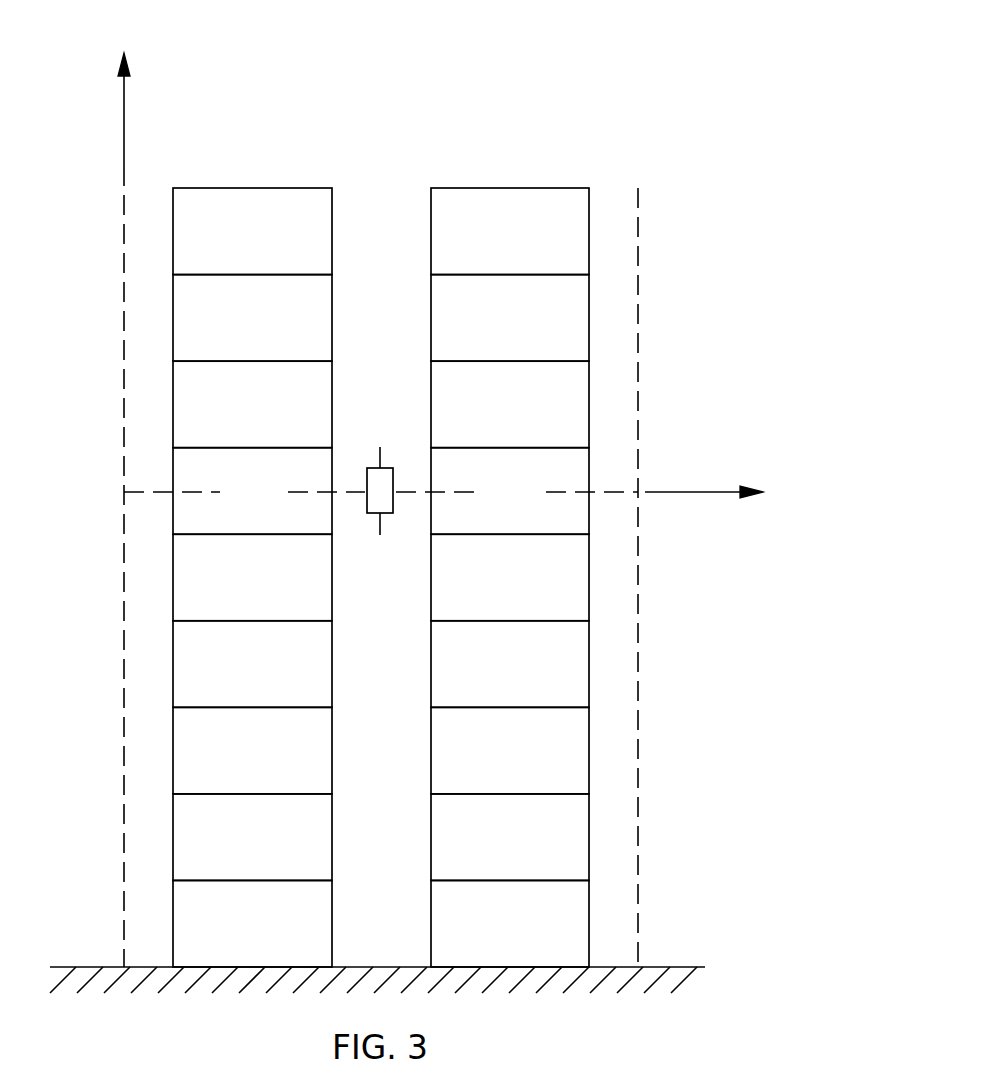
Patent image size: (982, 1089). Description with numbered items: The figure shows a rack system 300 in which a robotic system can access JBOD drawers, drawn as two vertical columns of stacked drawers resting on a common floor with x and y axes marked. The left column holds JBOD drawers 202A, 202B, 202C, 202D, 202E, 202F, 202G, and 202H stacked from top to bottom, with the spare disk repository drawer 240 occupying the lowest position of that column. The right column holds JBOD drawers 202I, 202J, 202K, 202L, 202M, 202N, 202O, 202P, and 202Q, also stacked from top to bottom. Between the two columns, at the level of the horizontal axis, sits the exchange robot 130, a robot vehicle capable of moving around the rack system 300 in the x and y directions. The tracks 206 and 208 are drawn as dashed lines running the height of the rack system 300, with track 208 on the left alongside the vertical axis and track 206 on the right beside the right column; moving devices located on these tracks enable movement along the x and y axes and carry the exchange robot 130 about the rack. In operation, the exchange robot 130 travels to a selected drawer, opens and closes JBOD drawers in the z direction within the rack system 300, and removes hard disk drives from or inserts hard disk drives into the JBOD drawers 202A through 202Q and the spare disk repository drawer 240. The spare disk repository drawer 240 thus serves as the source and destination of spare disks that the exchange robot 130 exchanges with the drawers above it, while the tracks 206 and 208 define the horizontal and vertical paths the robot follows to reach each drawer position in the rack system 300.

The rack system 300 is at (712, 123).
The exchange robot 130 is at (390, 468).
The track 206 is at (620, 492).
The track 208 is at (124, 565).
The spare disk repository drawer 240 is at (173, 925).
The JBOD drawer 202A is at (221, 247).
The JBOD drawer 202B is at (221, 334).
The JBOD drawer 202C is at (221, 420).
The JBOD drawer 202D is at (221, 507).
The JBOD drawer 202E is at (221, 593).
The JBOD drawer 202F is at (221, 680).
The JBOD drawer 202G is at (221, 766).
The JBOD drawer 202H is at (221, 853).
The JBOD drawer 202I is at (541, 247).
The JBOD drawer 202J is at (541, 334).
The JBOD drawer 202K is at (541, 420).
The JBOD drawer 202L is at (541, 507).
The JBOD drawer 202M is at (541, 593).
The JBOD drawer 202N is at (541, 680).
The JBOD drawer 202O is at (541, 766).
The JBOD drawer 202P is at (541, 853).
The JBOD drawer 202Q is at (541, 939).